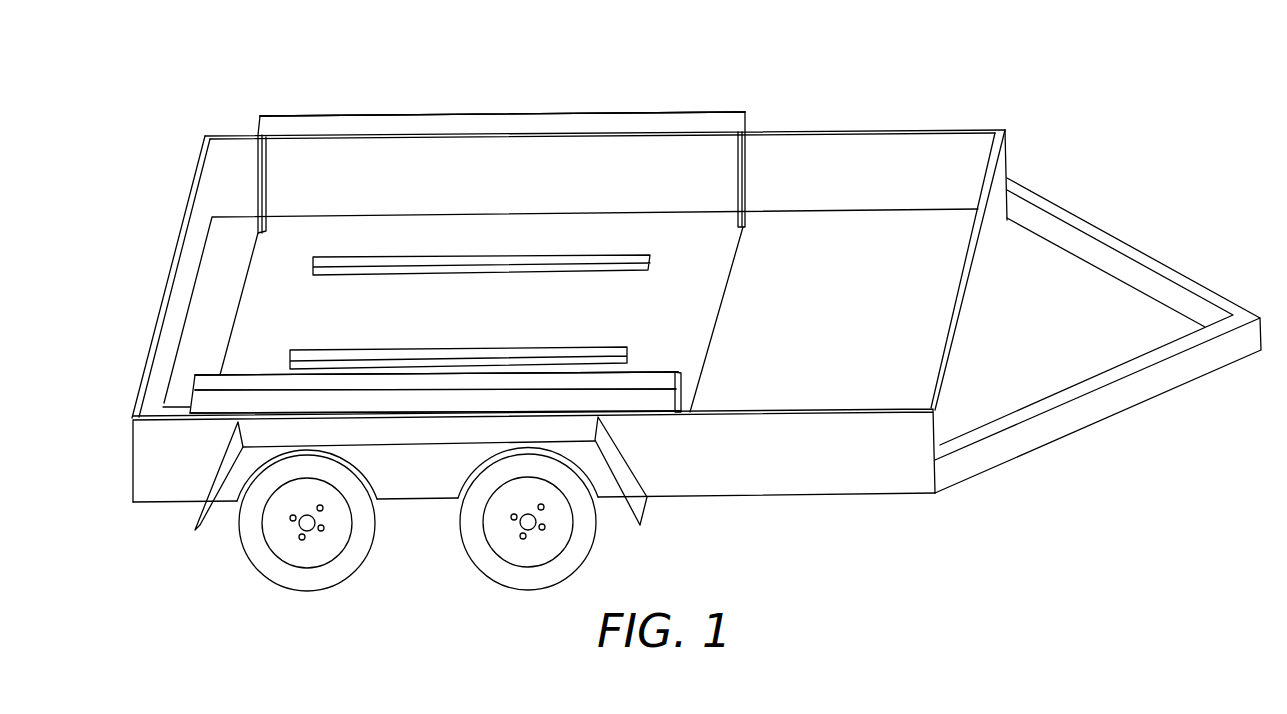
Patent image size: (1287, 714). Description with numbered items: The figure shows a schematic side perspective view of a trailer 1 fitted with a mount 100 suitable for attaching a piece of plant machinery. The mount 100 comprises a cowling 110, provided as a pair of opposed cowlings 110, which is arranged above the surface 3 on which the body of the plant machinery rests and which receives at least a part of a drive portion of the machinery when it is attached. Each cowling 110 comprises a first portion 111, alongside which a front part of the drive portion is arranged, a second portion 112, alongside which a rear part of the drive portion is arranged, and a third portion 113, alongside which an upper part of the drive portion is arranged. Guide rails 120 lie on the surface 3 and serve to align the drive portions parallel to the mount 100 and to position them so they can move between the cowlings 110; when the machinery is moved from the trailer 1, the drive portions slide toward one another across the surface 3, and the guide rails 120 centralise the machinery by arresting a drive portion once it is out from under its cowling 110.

The trailer 1 is at (198, 76).
The surface 3 is at (255, 312).
The mount 100 is at (312, 114).
The cowling 110 is at (635, 160).
The first portion 111 is at (746, 170).
The second portion 112 is at (258, 175).
The third portion 113 is at (509, 120).
The guide rail 120 is at (393, 352).